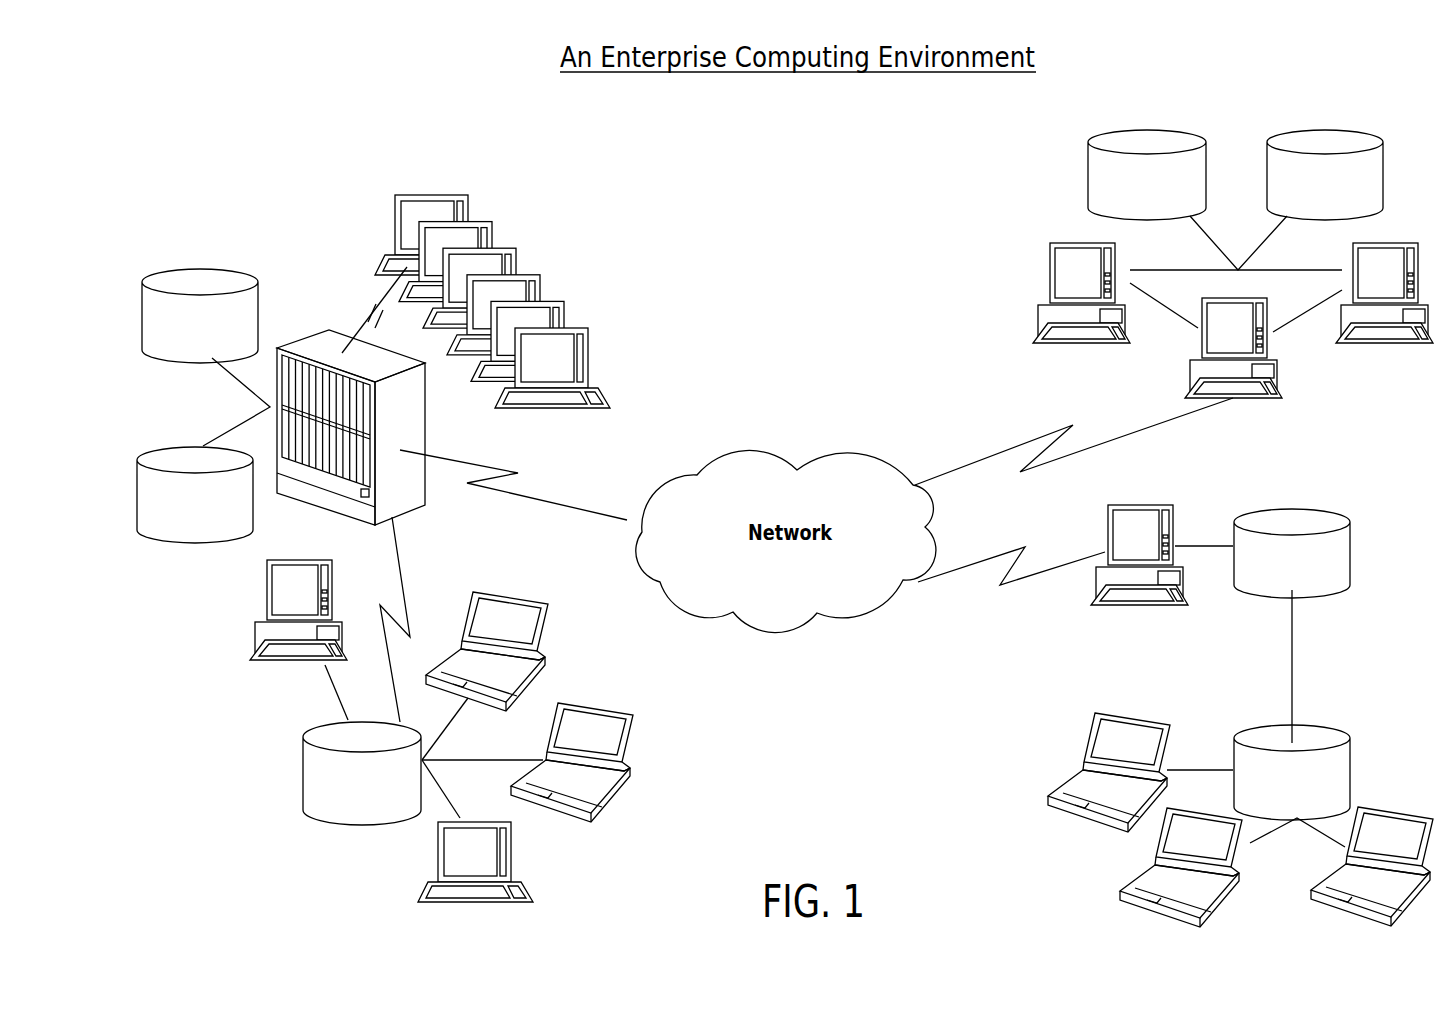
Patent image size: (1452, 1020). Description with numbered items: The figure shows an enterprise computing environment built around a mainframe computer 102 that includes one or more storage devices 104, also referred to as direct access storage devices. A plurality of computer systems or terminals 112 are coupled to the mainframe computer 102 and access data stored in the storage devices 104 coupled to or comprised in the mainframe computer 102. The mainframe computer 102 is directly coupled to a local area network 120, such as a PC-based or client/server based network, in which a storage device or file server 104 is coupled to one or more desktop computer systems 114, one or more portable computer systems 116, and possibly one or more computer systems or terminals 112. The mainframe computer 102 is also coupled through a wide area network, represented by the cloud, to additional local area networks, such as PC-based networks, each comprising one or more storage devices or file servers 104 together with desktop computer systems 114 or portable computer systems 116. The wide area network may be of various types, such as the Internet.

The mainframe computer 102 is at (412, 483).
The storage device 104 is at (178, 335).
The computer systems or terminals 112 is at (562, 265).
The desktop computer system 114 is at (255, 628).
The portable computer system 116 is at (548, 627).
The local area network 120 is at (211, 896).